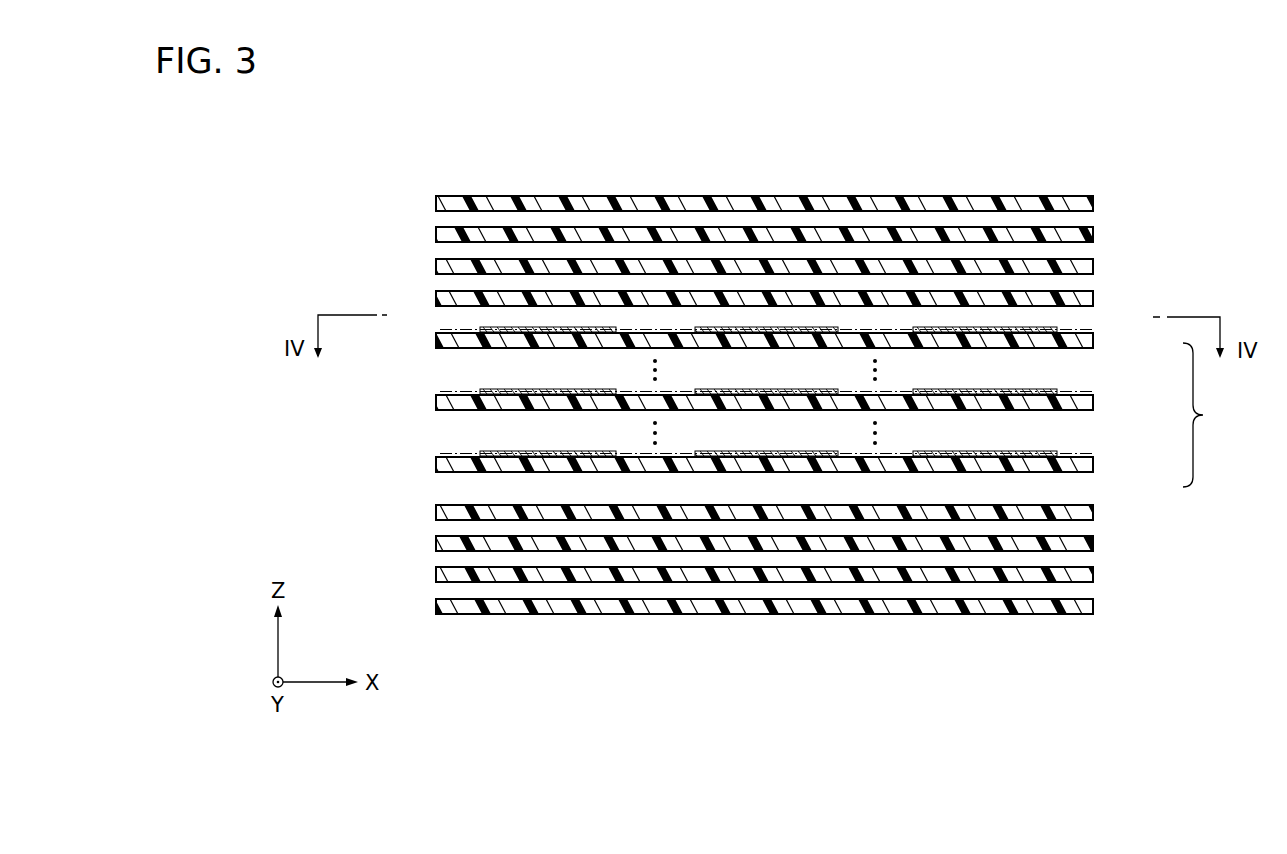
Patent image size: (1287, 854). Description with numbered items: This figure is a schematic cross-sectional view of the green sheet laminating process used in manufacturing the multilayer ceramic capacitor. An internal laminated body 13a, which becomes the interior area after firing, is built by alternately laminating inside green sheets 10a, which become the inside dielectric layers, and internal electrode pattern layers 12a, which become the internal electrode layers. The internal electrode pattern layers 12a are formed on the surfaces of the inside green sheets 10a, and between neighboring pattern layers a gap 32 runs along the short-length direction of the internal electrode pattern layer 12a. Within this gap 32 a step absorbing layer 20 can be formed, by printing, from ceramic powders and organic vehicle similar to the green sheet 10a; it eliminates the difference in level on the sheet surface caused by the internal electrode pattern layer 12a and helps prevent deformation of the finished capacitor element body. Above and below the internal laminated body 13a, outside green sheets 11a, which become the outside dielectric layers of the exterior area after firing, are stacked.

The inside green sheet 10a is at (1093, 341).
The outside green sheet 11a is at (436, 203).
The internal electrode pattern layer 12a is at (481, 329).
The internal laminated body 13a is at (1215, 415).
The step absorbing layer 20 is at (678, 322).
The gap 32 is at (637, 328).